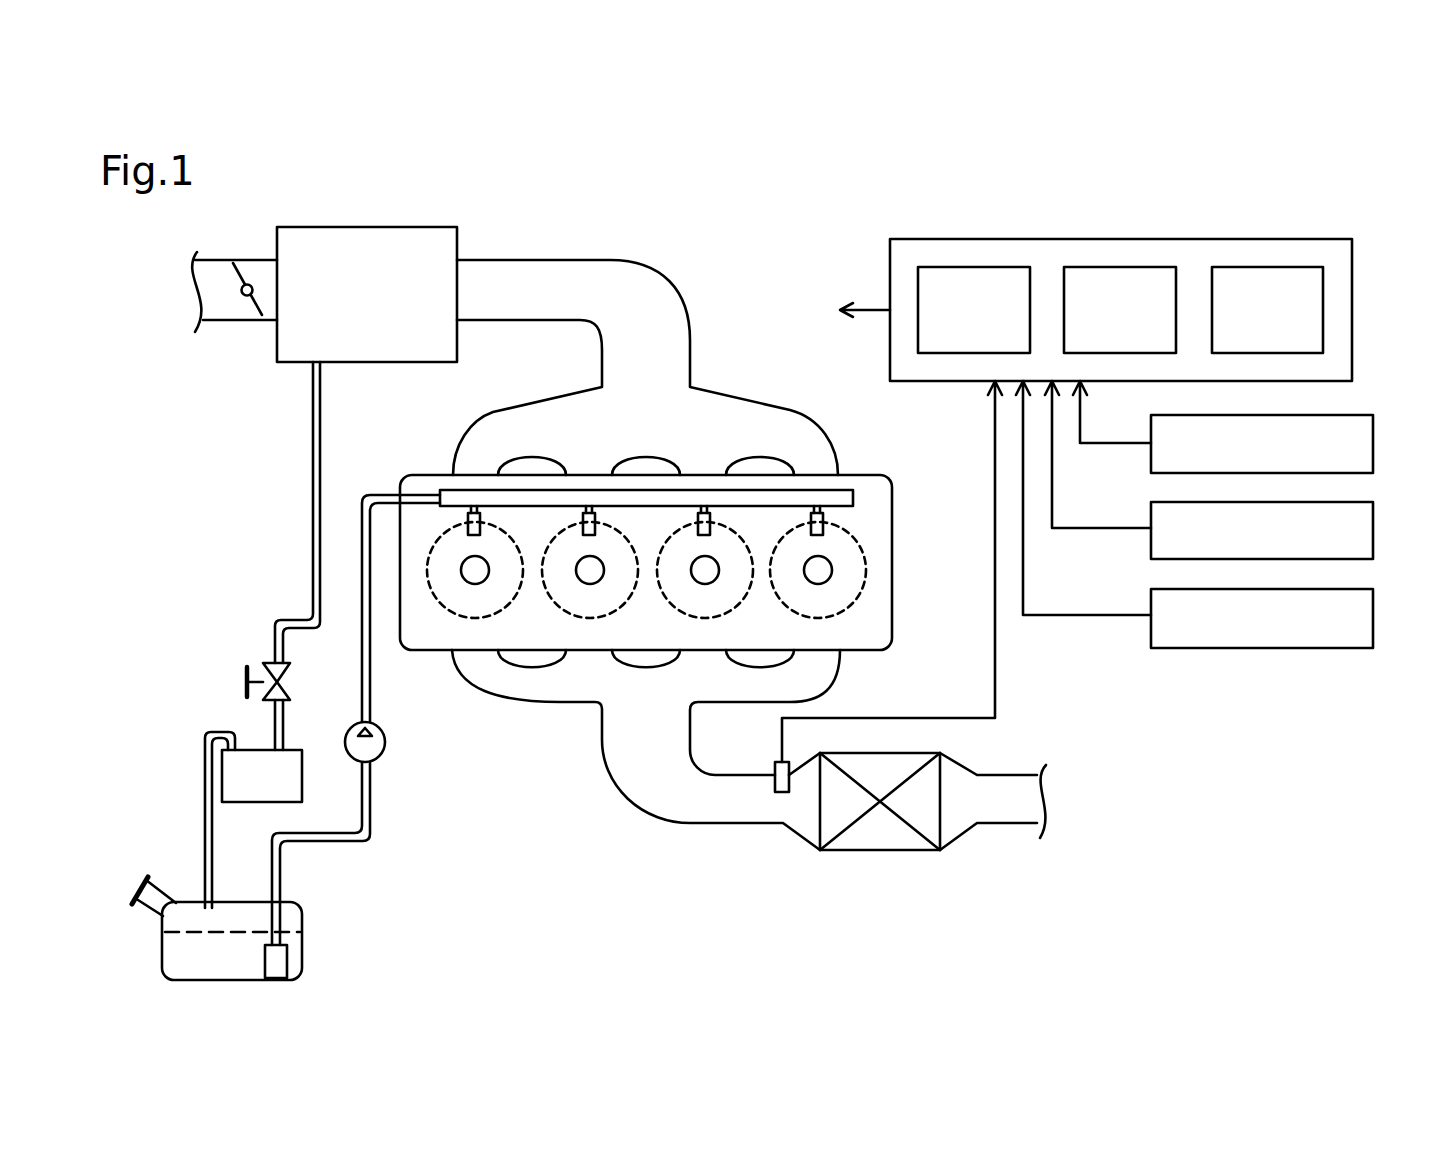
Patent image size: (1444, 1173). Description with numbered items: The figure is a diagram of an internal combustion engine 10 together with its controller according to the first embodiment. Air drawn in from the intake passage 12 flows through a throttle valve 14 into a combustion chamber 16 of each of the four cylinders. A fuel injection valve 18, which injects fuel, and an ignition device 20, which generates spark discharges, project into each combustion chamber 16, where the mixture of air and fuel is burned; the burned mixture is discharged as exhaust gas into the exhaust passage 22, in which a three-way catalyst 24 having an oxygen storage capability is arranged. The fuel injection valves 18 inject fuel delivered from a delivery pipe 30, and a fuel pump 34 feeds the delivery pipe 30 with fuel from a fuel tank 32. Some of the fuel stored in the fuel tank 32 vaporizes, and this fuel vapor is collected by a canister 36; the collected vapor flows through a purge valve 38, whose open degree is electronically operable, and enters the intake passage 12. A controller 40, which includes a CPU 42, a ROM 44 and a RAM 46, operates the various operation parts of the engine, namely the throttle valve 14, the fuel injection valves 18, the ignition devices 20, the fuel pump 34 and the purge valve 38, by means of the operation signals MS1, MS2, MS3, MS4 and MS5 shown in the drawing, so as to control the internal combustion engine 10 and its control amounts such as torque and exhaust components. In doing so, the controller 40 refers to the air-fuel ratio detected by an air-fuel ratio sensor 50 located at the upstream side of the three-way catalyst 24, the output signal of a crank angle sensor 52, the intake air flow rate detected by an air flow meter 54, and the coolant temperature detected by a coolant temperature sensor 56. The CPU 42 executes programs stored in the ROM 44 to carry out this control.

The internal combustion engine 10 is at (703, 216).
The intake passage 12 is at (218, 320).
The throttle valve 14 is at (237, 272).
The combustion chamber 16 is at (517, 541).
The fuel injection valve 18 is at (468, 518).
The ignition device 20 is at (486, 583).
The exhaust passage 22 is at (820, 676).
The three-way catalyst 24 is at (882, 840).
The delivery pipe 30 is at (845, 490).
The fuel tank 32 is at (302, 908).
The fuel pump 34 is at (380, 757).
The canister 36 is at (302, 785).
The purge valve 38 is at (290, 680).
The controller 40 is at (1328, 239).
The CPU 42 is at (973, 267).
The ROM 44 is at (1119, 267).
The RAM 46 is at (1266, 267).
The air-fuel ratio sensor 50 is at (781, 762).
The crank angle sensor 52 is at (1373, 445).
The air flow meter 54 is at (1373, 532).
The coolant temperature sensor 56 is at (1373, 619).
The throttle operation signal MS1 is at (254, 244).
The fuel injection operation signal MS2 is at (840, 526).
The ignition operation signal MS3 is at (850, 577).
The fuel pump operation signal MS4 is at (410, 749).
The purge valve operation signal MS5 is at (224, 689).